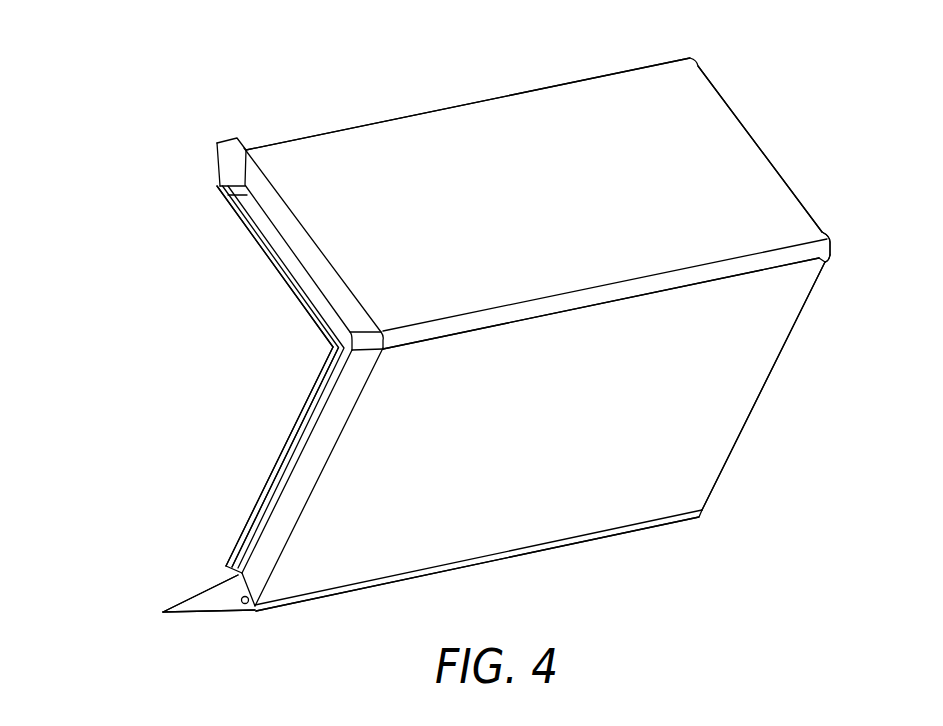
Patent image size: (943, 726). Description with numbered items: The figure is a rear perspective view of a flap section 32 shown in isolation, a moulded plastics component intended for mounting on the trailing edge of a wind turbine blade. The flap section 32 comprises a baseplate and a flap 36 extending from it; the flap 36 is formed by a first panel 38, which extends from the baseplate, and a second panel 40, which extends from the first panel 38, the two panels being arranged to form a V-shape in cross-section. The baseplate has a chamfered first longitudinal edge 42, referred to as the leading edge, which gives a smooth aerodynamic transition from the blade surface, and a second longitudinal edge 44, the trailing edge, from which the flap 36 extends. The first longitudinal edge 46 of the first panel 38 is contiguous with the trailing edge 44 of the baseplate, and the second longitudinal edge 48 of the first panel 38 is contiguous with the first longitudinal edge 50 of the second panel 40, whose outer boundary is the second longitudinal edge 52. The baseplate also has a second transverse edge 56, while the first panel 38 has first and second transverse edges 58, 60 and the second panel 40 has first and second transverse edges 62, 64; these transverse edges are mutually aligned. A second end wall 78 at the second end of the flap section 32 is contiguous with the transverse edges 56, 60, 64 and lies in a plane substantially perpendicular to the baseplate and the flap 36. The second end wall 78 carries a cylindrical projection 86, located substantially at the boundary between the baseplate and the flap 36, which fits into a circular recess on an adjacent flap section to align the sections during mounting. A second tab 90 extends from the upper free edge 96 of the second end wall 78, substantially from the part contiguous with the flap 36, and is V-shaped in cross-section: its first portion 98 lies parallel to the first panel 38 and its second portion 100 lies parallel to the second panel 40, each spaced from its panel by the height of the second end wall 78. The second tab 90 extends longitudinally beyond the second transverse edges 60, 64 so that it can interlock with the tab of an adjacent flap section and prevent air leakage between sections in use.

The flap section 32 is at (73, 487).
The flap 36 is at (847, 137).
The first panel 38 is at (708, 338).
The second panel 40 is at (475, 152).
The first longitudinal edge of the baseplate 42 is at (163, 612).
The second longitudinal edge of the baseplate 44 is at (583, 542).
The first longitudinal edge of the first flap panel 46 is at (665, 517).
The second longitudinal edge of the first flap panel 48 is at (825, 265).
The first longitudinal edge of the second flap panel 50 is at (813, 233).
The second longitudinal edge of the second flap panel 52 is at (632, 70).
The second transverse edge of the baseplate 56 is at (235, 613).
The first transverse edge of the first flap panel 58 is at (742, 435).
The second transverse edge of the first flap panel 60 is at (357, 407).
The first transverse edge of the second flap panel 62 is at (738, 115).
The second transverse edge of the second flap panel 64 is at (315, 240).
The second end wall 78 is at (327, 282).
The cylindrical projection 86 is at (253, 612).
The second tab 90 is at (288, 458).
The upper edge of the second end wall 96 is at (198, 595).
The first portion of the second tab 98 is at (252, 538).
The second portion of the second tab 100 is at (267, 230).